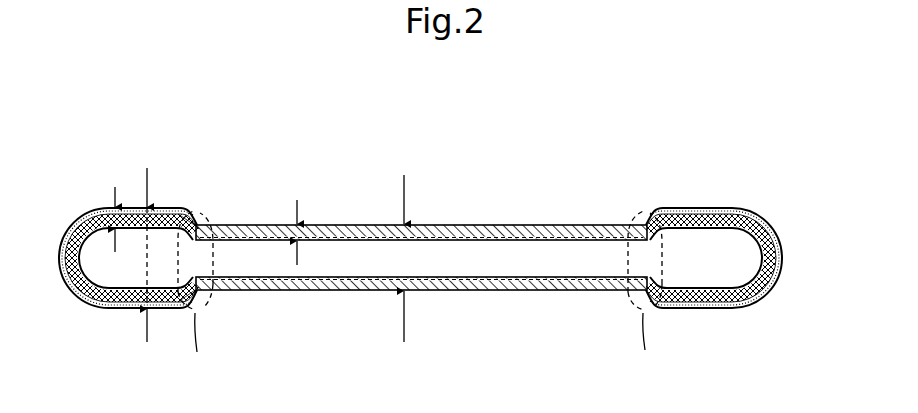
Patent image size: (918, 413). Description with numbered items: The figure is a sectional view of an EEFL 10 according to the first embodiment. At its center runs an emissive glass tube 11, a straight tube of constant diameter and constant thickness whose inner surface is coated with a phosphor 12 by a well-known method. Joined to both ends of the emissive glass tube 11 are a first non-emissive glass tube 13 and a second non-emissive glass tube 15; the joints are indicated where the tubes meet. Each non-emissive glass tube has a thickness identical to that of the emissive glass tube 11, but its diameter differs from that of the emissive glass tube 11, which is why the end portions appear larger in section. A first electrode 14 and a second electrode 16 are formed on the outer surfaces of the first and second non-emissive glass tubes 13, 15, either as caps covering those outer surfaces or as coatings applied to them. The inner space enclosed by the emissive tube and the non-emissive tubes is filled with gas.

The EEFL 10 is at (181, 93).
The emissive glass tube 11 is at (513, 225).
The phosphor 12 is at (537, 290).
The first non-emissive glass tube 13 is at (180, 208).
The first electrode 14 is at (92, 207).
The second non-emissive glass tube 15 is at (698, 208).
The second electrode 16 is at (709, 308).